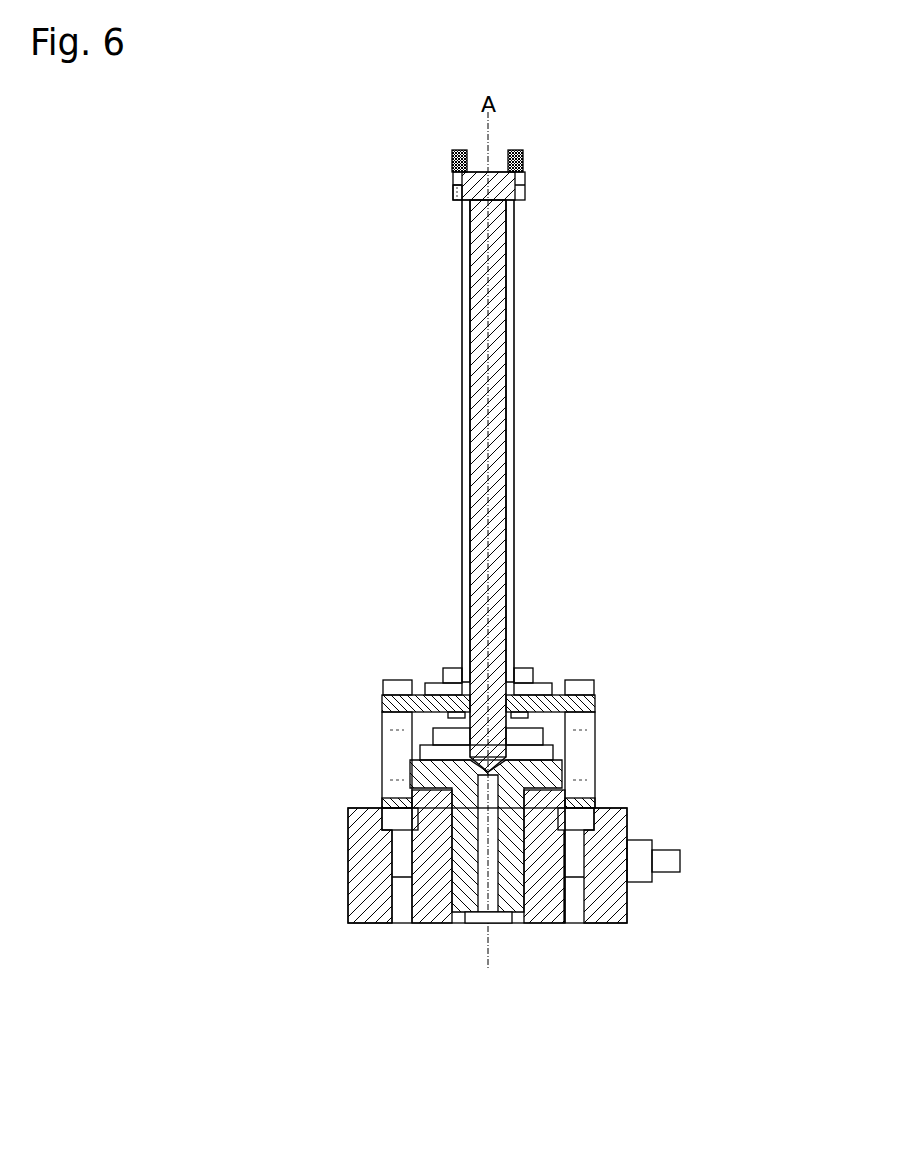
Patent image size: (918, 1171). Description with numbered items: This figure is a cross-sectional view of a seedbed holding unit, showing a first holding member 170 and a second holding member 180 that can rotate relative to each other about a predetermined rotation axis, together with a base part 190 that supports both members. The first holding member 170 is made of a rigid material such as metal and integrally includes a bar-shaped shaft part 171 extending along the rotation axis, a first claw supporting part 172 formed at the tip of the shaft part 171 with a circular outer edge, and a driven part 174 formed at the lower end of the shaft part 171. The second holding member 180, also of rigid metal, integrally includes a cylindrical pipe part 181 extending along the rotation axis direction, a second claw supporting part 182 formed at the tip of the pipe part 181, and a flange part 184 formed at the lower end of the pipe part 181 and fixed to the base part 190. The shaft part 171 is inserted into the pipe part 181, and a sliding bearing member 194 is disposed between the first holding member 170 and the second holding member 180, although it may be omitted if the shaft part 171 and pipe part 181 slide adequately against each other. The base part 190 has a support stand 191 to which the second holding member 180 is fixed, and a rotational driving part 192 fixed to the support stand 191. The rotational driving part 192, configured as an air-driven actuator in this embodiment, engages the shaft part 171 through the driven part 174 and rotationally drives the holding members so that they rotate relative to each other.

The first holding member 170 is at (502, 398).
The shaft part 171 is at (497, 300).
The first claw supporting part 172 is at (523, 158).
The driven part 174 is at (538, 677).
The second holding member 180 is at (461, 416).
The pipe part 181 is at (463, 323).
The second claw supporting part 182 is at (455, 190).
The flange part 184 is at (432, 682).
The base part 190 is at (587, 801).
The support stand 191 is at (572, 712).
The rotational driving part 192 is at (627, 812).
The sliding bearing member 194 is at (522, 197).